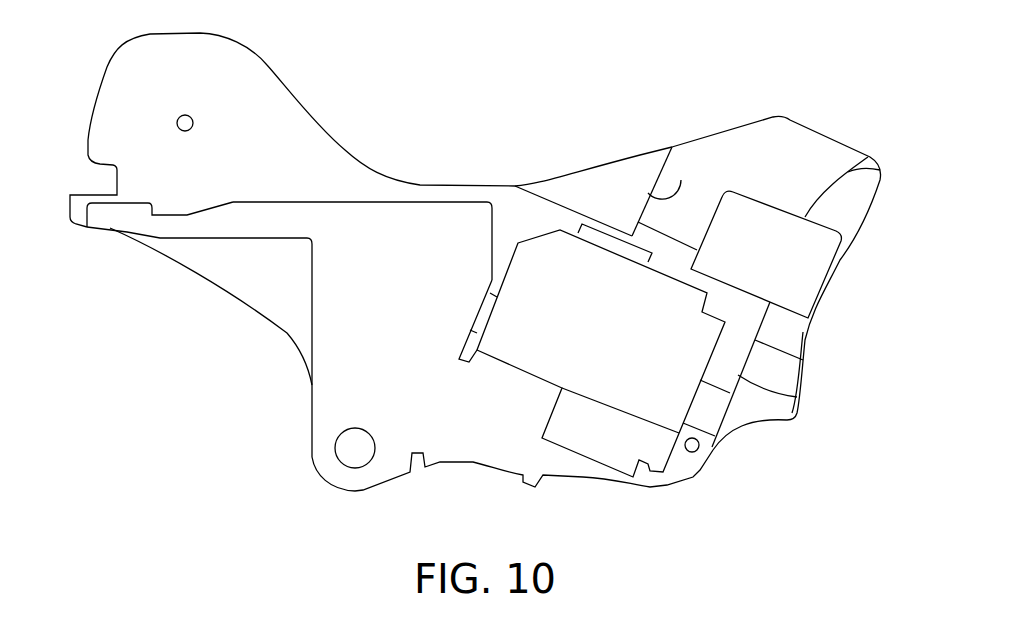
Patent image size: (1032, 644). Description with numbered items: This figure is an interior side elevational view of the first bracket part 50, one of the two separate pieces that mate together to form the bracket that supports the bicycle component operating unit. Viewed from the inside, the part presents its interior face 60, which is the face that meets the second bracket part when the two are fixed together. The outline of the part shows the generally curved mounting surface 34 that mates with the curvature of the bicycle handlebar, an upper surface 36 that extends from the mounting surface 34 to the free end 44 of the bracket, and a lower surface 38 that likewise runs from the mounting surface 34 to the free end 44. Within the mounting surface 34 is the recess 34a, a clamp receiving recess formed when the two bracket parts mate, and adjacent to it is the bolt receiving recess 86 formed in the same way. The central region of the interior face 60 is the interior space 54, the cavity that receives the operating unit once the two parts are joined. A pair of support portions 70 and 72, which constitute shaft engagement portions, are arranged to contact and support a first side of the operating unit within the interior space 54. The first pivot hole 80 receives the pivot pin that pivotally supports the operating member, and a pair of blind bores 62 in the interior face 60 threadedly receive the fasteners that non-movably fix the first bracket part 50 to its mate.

The first bracket part 50 is at (473, 282).
The interior face 60 is at (242, 113).
The free end 44 is at (86, 138).
The upper surface 36 is at (453, 185).
The lower surface 38 is at (588, 478).
The first pivot hole 80 is at (350, 442).
The blind bores 62 is at (178, 121).
The interior space 54 is at (522, 342).
The support portion 72 is at (458, 347).
The bolt receiving recess 86 is at (648, 193).
The mounting surface 34 is at (827, 292).
The recess 34a is at (803, 243).
The support portion 70 is at (793, 395).